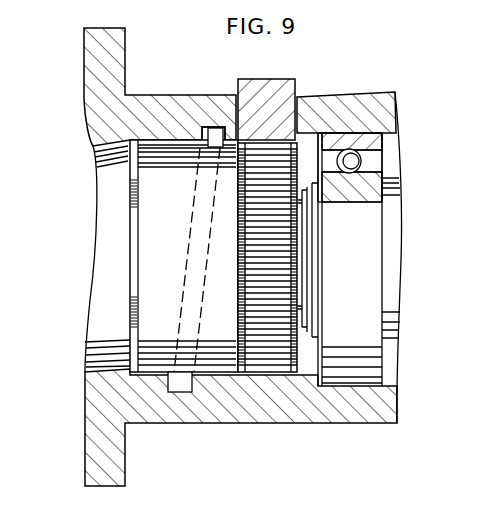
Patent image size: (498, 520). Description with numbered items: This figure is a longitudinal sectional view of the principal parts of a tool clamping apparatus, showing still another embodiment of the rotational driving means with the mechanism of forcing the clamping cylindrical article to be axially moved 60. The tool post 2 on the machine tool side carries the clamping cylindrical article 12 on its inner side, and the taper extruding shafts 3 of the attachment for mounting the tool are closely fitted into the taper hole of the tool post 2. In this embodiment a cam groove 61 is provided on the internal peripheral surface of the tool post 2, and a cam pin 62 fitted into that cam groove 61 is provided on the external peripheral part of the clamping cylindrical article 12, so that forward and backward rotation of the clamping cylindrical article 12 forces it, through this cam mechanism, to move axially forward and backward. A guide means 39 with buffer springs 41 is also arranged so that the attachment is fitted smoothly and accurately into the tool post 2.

The tool post 2 is at (357, 407).
The taper extruding shafts 3 is at (110, 178).
The clamping cylindrical article 12 is at (163, 202).
The guide means 39 is at (275, 370).
The buffer springs 41 is at (288, 96).
The rotational driving means with mechanism of forcing the clamping cylindrical arti 60 is at (213, 90).
The cam groove 61 is at (205, 130).
The cam pin 62 is at (240, 80).